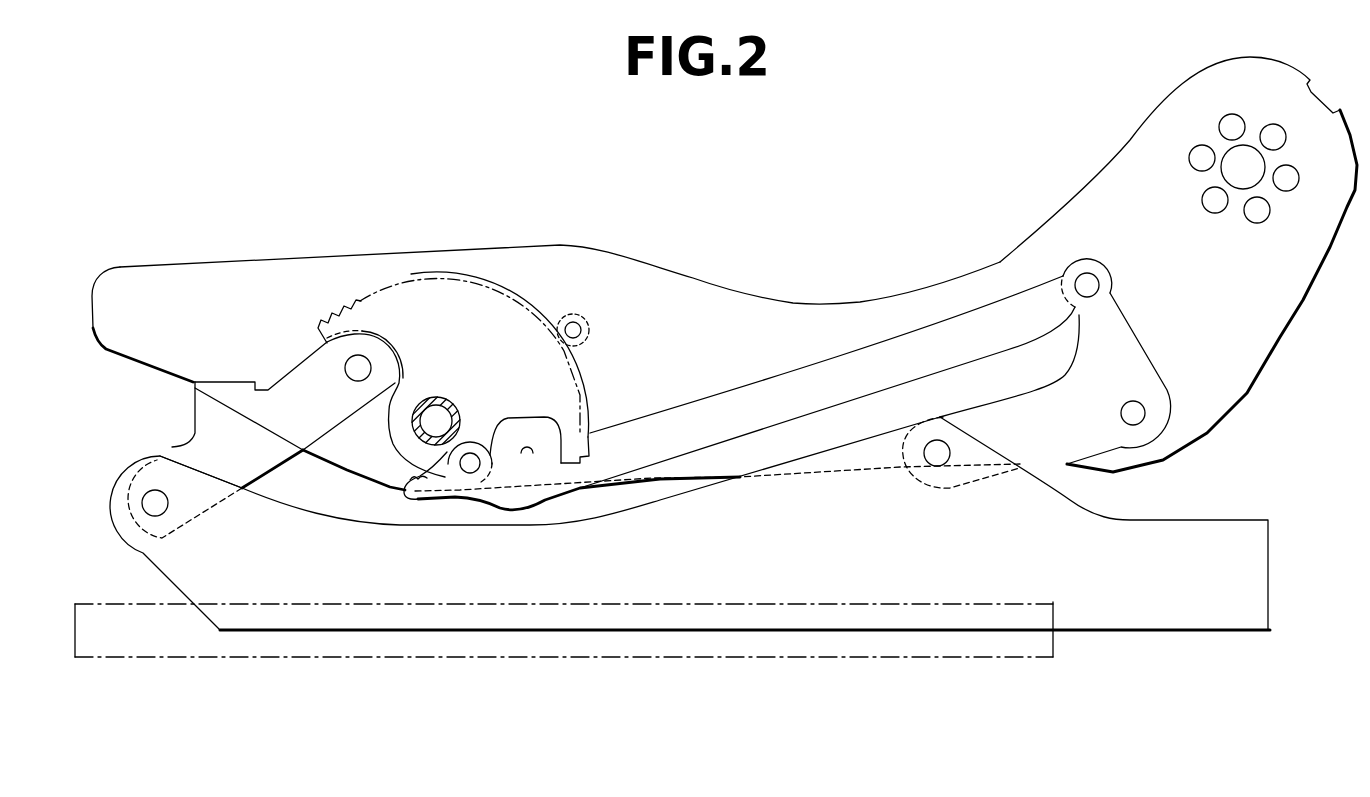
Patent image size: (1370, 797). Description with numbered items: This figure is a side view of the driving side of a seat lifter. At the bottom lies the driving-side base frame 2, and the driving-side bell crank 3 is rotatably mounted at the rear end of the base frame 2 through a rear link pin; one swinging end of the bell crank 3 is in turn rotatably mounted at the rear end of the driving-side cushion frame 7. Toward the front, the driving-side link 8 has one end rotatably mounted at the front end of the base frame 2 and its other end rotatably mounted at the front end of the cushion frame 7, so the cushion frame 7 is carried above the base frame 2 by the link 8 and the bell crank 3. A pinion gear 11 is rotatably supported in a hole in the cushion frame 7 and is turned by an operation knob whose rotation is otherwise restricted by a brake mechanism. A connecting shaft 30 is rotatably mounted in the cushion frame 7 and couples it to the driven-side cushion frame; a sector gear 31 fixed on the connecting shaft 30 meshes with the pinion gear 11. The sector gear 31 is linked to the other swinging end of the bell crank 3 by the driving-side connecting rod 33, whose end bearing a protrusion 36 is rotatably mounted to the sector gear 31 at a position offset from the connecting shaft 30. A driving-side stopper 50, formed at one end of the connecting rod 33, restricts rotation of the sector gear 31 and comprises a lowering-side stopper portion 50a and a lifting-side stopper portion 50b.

The driving-side base frame 2 is at (175, 582).
The driving-side bell crank 3 is at (1110, 433).
The driving-side cushion frame 7 is at (220, 272).
The driving-side link 8 is at (183, 450).
The pinion gear 11 is at (583, 315).
The connecting shaft 30 is at (437, 397).
The sector gear 31 is at (413, 300).
The driving-side connecting rod 33 is at (937, 347).
The protrusion 36 is at (407, 498).
The driving-side stopper 50 is at (511, 597).
The lowering-side stopper portion 50a is at (417, 490).
The lifting-side stopper portion 50b is at (523, 453).